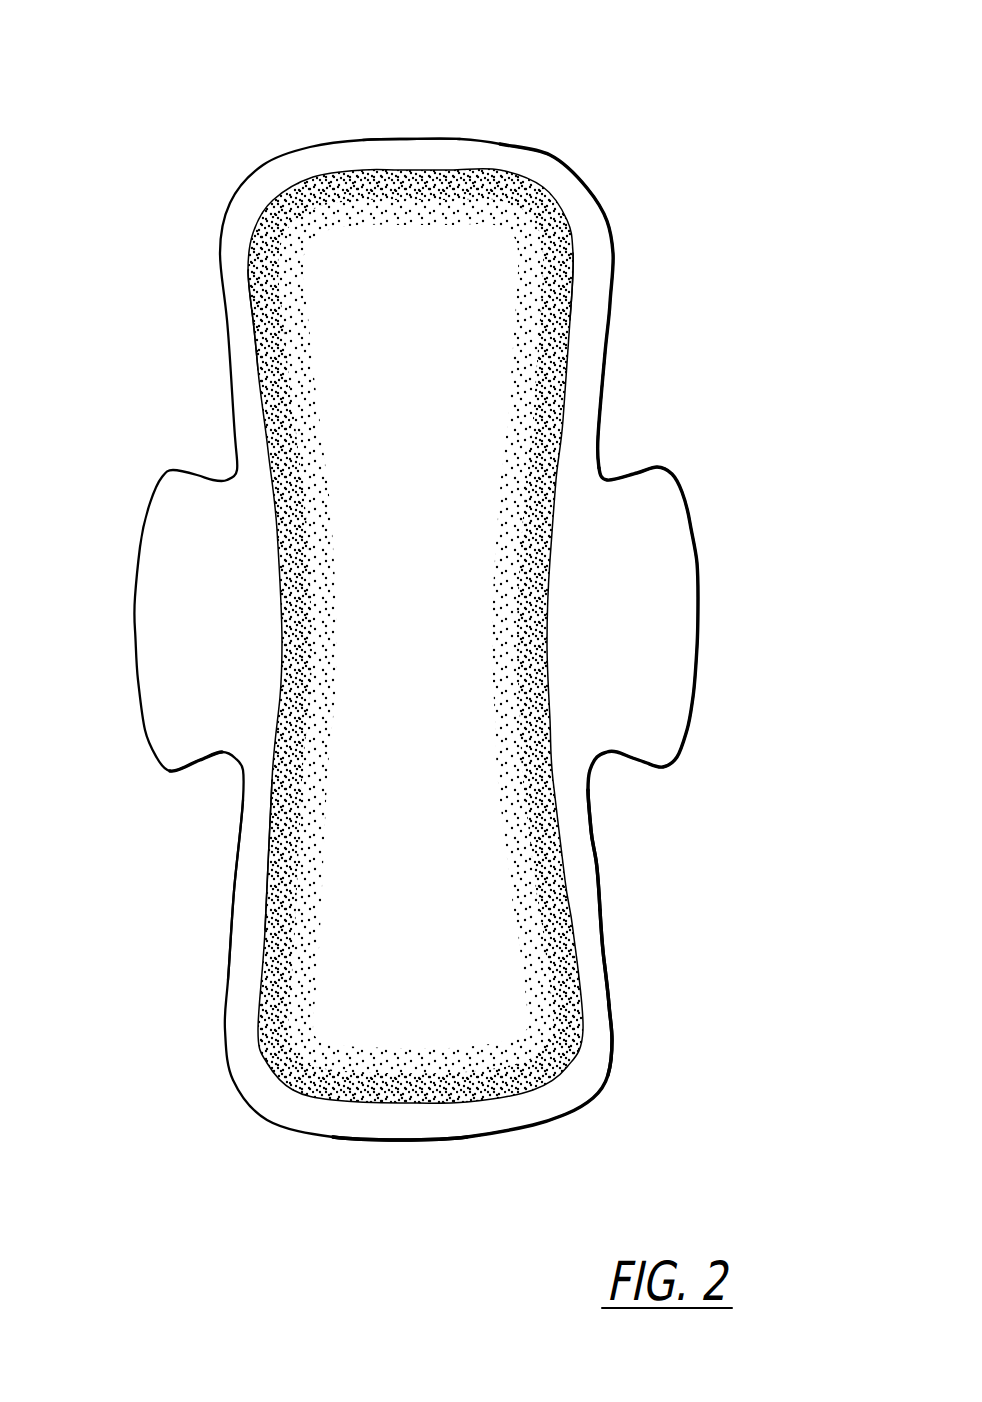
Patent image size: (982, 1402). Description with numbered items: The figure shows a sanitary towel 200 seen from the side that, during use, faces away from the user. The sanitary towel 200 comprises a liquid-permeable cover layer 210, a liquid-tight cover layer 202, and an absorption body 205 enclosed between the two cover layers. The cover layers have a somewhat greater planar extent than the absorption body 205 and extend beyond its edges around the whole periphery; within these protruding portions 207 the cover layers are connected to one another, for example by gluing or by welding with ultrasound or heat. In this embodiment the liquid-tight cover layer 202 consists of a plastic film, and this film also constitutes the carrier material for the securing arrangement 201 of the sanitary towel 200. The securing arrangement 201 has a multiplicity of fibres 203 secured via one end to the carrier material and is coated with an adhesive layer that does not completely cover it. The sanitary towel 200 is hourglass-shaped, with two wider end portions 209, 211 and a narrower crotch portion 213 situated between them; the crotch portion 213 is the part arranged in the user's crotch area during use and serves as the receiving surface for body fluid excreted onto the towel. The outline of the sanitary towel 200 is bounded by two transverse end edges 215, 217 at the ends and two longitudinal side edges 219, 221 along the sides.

The sanitary towel 200 is at (574, 113).
The securing arrangement 201 is at (537, 373).
The liquid-tight cover layer 202 is at (107, 1015).
The fibres 203 is at (368, 640).
The absorption body 205 is at (548, 456).
The protruding portions 207 is at (587, 947).
The end portion 209 is at (570, 293).
The liquid-permeable cover layer 210 is at (260, 320).
The end portion 211 is at (590, 1040).
The crotch portion 213 is at (547, 647).
The transverse end edge 215 is at (403, 136).
The transverse end edge 217 is at (413, 1143).
The longitudinal side edge 219 is at (105, 880).
The longitudinal side edge 221 is at (595, 848).